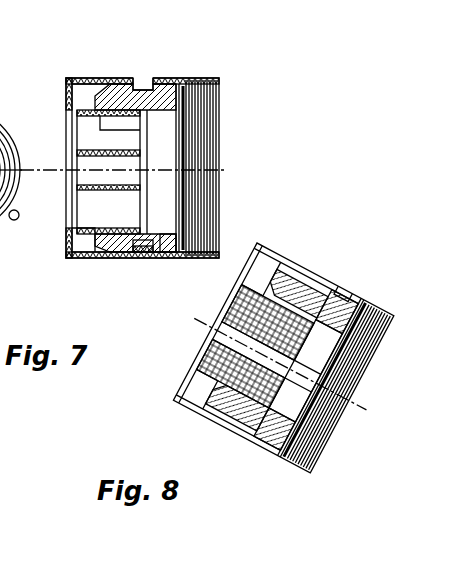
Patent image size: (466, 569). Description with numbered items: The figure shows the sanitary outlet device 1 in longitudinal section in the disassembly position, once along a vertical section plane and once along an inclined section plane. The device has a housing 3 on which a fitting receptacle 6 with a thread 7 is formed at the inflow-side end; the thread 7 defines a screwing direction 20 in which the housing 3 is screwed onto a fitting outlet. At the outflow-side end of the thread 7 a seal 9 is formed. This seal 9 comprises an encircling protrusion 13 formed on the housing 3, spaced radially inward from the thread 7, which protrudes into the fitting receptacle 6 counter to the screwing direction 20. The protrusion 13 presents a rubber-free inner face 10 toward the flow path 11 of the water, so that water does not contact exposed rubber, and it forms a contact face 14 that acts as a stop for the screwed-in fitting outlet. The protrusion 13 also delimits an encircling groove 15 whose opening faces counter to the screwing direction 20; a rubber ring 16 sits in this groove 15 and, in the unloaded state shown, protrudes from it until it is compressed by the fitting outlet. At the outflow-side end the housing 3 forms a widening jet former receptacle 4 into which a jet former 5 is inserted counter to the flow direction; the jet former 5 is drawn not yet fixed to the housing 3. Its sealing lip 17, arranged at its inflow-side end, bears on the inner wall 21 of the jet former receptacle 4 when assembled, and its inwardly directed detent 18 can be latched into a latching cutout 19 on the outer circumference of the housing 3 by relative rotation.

In FIG. 7, the sanitary outlet device 1 is at (342, 58).
In FIG. 8, the sanitary outlet device 1 is at (352, 241).
In FIG. 7, the housing 3 is at (160, 84).
In FIG. 8, the housing 3 is at (243, 440).
In FIG. 7, the jet former receptacle 4 is at (78, 214).
In FIG. 8, the jet former receptacle 4 is at (190, 354).
In FIG. 7, the jet former 5 is at (68, 248).
In FIG. 8, the jet former 5 is at (266, 282).
In FIG. 7, the fitting receptacle 6 is at (225, 216).
In FIG. 8, the fitting receptacle 6 is at (325, 449).
In FIG. 7, the thread 7 is at (209, 80).
In FIG. 8, the thread 7 is at (289, 467).
In FIG. 7, the seal 9 is at (173, 249).
In FIG. 8, the seal 9 is at (352, 303).
In FIG. 7, the rubber-free inner face 10 is at (182, 128).
In FIG. 8, the rubber-free inner face 10 is at (330, 378).
In FIG. 7, the flow path 11 is at (172, 182).
In FIG. 8, the flow path 11 is at (295, 386).
In FIG. 7, the protrusion 13 is at (185, 120).
In FIG. 8, the protrusion 13 is at (262, 425).
In FIG. 7, the contact face 14 is at (192, 100).
In FIG. 8, the contact face 14 is at (297, 464).
In FIG. 7, the groove 15 is at (141, 238).
In FIG. 8, the groove 15 is at (358, 302).
In FIG. 7, the rubber ring 16 is at (184, 97).
In FIG. 8, the rubber ring 16 is at (268, 452).
In FIG. 7, the sealing lip 17 is at (118, 254).
In FIG. 8, the sealing lip 17 is at (327, 280).
In FIG. 8, the detent 18 is at (220, 421).
In FIG. 7, the latching cutout 19 is at (143, 76).
In FIG. 8, the latching cutout 19 is at (346, 290).
In FIG. 7, the screwing direction 20 is at (263, 83).
In FIG. 8, the screwing direction 20 is at (427, 367).
In FIG. 7, the inner wall 21 is at (58, 210).
In FIG. 8, the inner wall 21 is at (228, 315).